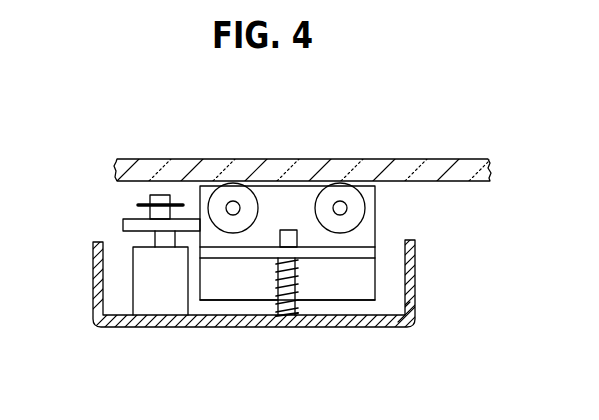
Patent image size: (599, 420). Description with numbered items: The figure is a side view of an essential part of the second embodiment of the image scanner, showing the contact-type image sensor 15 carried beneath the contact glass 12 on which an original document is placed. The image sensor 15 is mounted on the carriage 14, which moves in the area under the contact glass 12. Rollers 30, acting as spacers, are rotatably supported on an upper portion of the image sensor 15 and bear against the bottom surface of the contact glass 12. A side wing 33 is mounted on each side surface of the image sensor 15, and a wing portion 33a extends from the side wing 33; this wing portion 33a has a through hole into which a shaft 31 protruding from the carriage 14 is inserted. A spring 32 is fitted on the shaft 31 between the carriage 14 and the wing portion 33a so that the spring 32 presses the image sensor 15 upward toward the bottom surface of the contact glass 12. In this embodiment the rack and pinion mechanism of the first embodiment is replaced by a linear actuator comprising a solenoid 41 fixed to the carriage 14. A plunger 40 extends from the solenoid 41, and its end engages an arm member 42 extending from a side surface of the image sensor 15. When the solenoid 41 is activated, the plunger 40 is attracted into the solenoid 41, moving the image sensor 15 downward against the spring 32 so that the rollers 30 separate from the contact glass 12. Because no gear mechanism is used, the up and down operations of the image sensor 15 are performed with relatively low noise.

The contact glass 12 is at (380, 161).
The carriage 14 is at (407, 263).
The contact-type image sensor 15 is at (245, 305).
The rollers 30 is at (242, 180).
The shaft 31 is at (288, 317).
The spring 32 is at (295, 290).
The side wing 33 is at (342, 283).
The wing portion 33a is at (353, 247).
The plunger 40 is at (155, 240).
The solenoid 41 is at (155, 295).
The arm member 42 is at (190, 220).